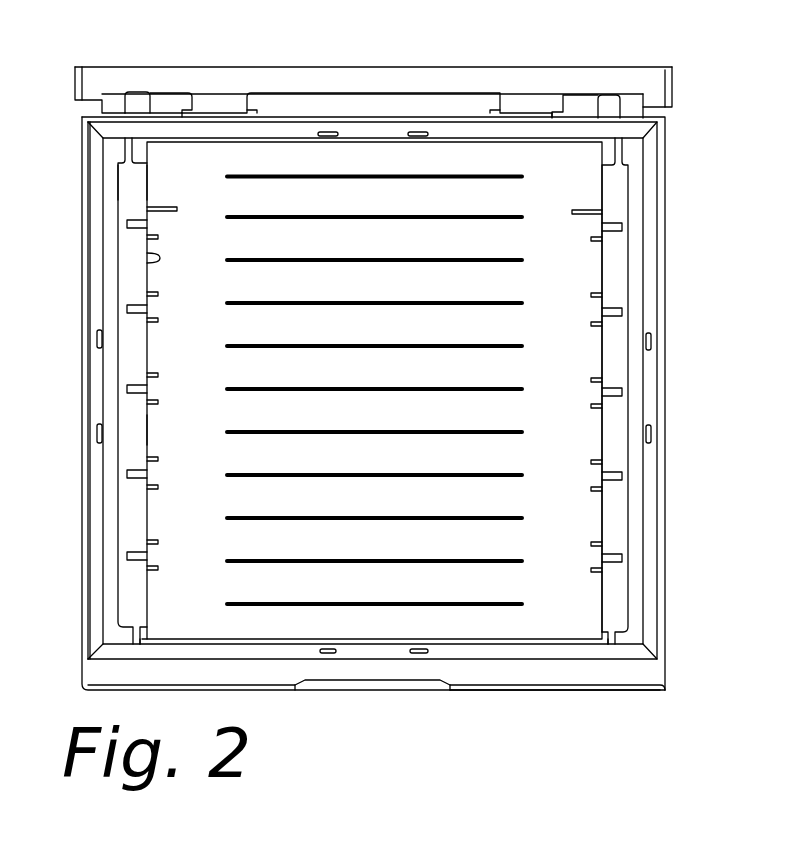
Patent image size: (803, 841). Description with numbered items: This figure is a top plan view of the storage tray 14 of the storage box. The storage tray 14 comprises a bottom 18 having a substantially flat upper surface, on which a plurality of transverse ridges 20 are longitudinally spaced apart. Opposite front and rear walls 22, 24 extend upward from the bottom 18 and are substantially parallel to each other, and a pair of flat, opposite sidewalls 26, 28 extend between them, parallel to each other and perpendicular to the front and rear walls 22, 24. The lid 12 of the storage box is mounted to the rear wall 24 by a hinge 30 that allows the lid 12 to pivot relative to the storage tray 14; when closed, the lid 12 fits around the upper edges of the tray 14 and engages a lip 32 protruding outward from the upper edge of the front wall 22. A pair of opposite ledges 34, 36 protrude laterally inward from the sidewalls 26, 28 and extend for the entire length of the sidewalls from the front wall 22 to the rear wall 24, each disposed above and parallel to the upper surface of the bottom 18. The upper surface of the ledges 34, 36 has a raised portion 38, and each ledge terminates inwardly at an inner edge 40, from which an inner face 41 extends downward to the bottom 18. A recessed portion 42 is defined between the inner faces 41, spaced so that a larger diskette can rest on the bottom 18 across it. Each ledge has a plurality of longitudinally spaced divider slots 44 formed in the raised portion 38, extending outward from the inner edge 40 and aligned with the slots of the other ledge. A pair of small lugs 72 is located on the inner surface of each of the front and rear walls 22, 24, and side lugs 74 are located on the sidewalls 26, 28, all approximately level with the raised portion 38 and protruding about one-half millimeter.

The lid 12 is at (650, 88).
The storage tray 14 is at (653, 177).
The bottom 18 is at (565, 366).
The transverse ridges 20 is at (475, 391).
The front wall 22 is at (527, 656).
The rear wall 24 is at (122, 130).
The sidewall 26 is at (95, 503).
The sidewall 28 is at (663, 432).
The hinge 30 is at (256, 102).
The lip 32 is at (622, 677).
The ledge 34 is at (110, 390).
The ledge 36 is at (638, 243).
The raised portion 38 is at (133, 188).
The inner edge 40 is at (148, 430).
The inner face 41 is at (152, 260).
The recessed portion 42 is at (350, 193).
The divider slots 44 is at (613, 475).
The lugs 72 is at (418, 656).
The side lugs 74 is at (94, 343).